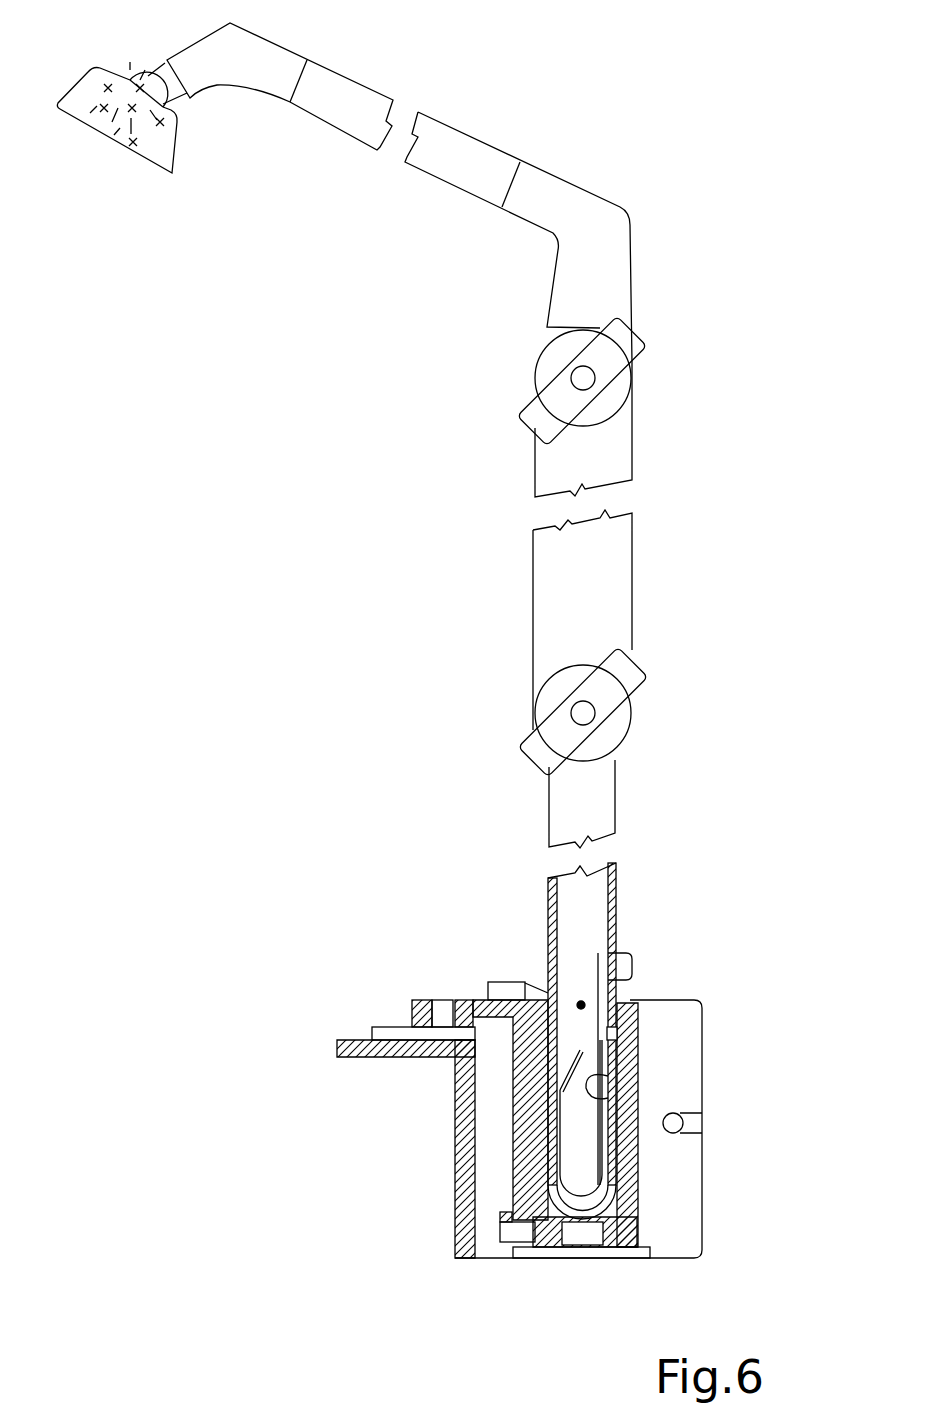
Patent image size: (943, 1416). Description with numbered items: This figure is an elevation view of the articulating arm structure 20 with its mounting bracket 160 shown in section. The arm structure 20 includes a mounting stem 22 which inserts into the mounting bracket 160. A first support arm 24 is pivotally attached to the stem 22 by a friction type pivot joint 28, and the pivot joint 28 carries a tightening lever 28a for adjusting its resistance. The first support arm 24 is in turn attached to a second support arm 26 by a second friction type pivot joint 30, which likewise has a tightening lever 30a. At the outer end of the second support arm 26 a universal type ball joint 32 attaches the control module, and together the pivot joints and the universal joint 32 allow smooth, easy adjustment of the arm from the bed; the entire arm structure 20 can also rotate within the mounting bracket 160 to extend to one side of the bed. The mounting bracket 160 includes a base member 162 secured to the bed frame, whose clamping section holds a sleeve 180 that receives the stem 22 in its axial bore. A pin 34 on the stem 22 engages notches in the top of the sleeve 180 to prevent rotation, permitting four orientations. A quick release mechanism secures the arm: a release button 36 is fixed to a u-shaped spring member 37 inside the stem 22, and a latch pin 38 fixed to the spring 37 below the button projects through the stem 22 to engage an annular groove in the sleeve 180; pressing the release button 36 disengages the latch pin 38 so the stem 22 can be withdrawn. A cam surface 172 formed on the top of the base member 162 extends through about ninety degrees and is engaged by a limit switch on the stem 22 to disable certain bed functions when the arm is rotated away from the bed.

The arm structure 20 is at (722, 481).
The mounting stem 22 is at (616, 902).
The first support arm 24 is at (620, 590).
The second support arm 26 is at (458, 143).
The pivot joint 28 is at (618, 730).
The tightening lever 28a is at (528, 738).
The second pivot joint 30 is at (618, 392).
The tightening lever 30a is at (528, 410).
The universal type ball joint 32 is at (88, 116).
The pin 34 is at (577, 1000).
The release button 36 is at (633, 965).
The u-shaped spring member 37 is at (608, 1098).
The latch pin 38 is at (672, 1017).
The mounting bracket 160 is at (738, 1118).
The base member 162 is at (702, 1225).
The cam surface 172 is at (495, 982).
The sleeve 180 is at (640, 1177).